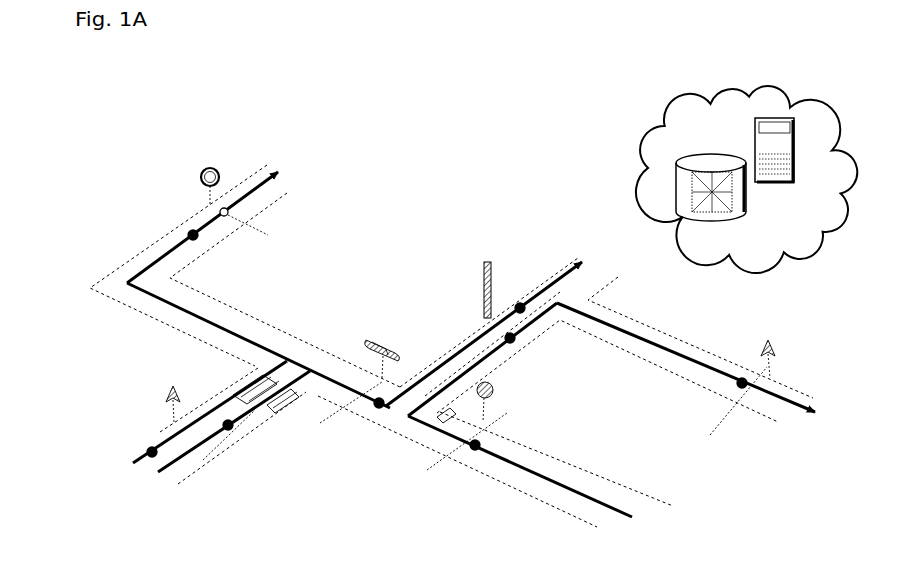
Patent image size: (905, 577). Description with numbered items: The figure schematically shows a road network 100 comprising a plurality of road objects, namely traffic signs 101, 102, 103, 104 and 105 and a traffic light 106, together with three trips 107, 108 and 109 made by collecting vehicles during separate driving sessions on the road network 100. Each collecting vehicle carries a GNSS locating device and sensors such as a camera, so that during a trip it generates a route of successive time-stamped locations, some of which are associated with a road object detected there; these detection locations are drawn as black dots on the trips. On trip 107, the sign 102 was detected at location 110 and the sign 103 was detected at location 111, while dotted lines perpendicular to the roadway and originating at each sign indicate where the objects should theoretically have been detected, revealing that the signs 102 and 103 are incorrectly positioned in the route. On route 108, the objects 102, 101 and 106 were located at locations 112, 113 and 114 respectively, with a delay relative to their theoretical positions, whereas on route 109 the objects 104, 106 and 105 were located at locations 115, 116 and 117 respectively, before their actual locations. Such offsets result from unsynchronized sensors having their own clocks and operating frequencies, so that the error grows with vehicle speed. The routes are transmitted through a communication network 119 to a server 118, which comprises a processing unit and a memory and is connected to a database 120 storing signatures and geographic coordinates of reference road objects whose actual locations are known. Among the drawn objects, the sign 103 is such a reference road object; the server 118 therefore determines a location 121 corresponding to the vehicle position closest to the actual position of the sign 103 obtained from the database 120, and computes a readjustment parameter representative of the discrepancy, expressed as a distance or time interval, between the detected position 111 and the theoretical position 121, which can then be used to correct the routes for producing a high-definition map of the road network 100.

The road network 100 is at (52, 262).
The traffic sign 101 is at (362, 340).
The traffic sign 102 is at (166, 396).
The traffic sign 103 is at (208, 166).
The traffic sign 104 is at (492, 400).
The traffic sign 105 is at (760, 348).
The traffic light 106 is at (486, 260).
The trip 107 is at (133, 252).
The trip 108 is at (443, 350).
The trip 109 is at (585, 500).
The location 110 is at (148, 450).
The location 111 is at (188, 230).
The location 112 is at (232, 428).
The location 113 is at (380, 409).
The location 114 is at (518, 303).
The location 115 is at (476, 451).
The location 116 is at (515, 340).
The location 117 is at (737, 388).
The server 118 is at (796, 147).
The communication network 119 is at (836, 195).
The database 120 is at (749, 186).
The location 121 is at (223, 220).